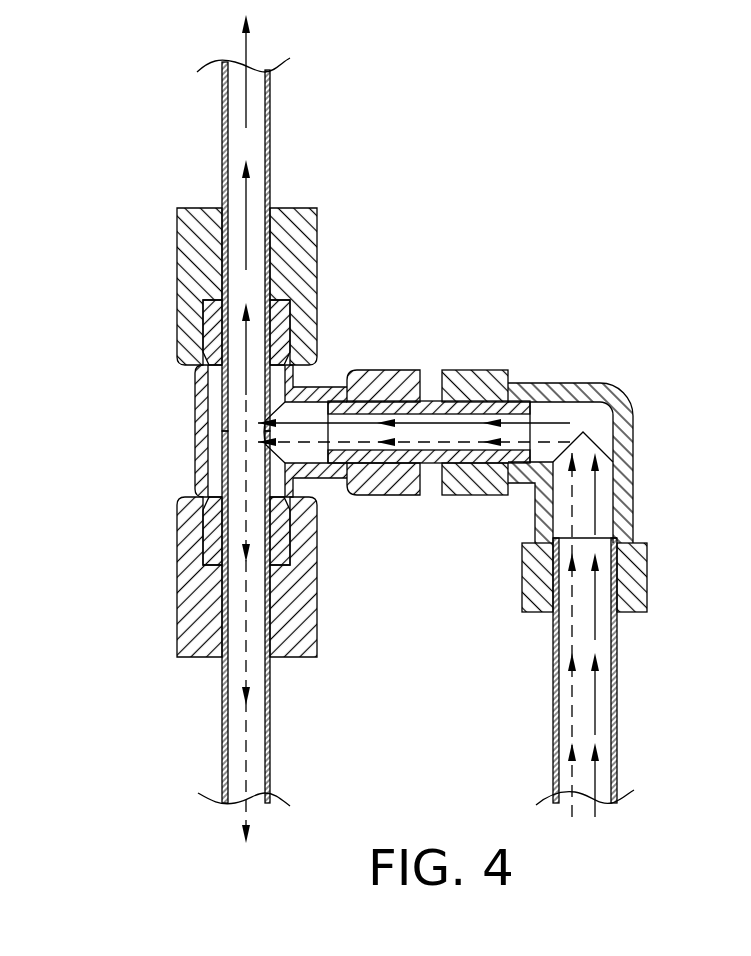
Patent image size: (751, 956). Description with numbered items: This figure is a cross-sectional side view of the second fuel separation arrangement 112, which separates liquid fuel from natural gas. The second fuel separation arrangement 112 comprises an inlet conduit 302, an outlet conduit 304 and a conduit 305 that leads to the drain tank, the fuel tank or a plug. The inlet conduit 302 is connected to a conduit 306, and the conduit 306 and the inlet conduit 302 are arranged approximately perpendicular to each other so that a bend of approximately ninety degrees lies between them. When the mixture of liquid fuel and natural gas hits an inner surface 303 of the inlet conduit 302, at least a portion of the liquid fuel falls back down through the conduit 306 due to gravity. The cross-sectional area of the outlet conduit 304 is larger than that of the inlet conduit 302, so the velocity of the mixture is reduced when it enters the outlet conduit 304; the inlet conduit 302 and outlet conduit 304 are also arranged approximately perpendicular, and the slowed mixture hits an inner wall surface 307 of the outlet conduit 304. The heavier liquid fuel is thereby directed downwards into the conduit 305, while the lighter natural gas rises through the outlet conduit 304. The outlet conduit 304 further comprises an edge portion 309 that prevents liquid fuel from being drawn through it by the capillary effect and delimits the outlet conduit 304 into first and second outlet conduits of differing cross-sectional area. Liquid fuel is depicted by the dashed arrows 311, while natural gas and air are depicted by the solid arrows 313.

The second fuel separation arrangement 112 is at (398, 429).
The inlet conduit 302 is at (477, 417).
The inner surface 303 is at (581, 410).
The outlet conduit 304 is at (248, 140).
The conduit 305 is at (248, 716).
The conduit 306 is at (580, 686).
The inner wall surface 307 is at (222, 416).
The edge portion 309 is at (216, 372).
The dashed arrows 311 is at (248, 761).
The solid arrows 313 is at (238, 95).